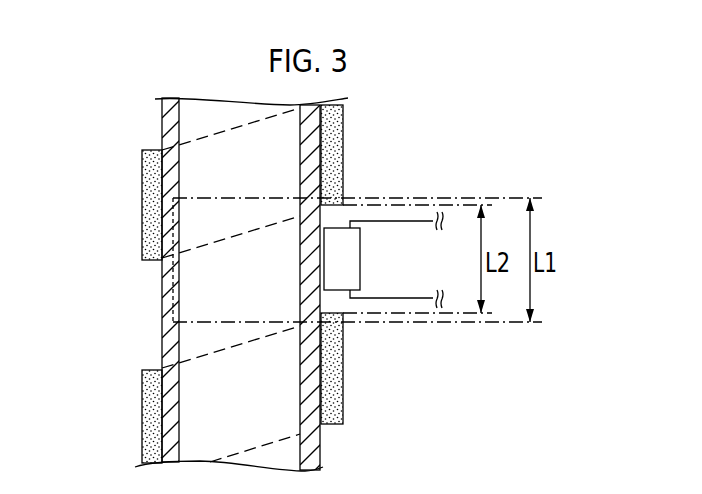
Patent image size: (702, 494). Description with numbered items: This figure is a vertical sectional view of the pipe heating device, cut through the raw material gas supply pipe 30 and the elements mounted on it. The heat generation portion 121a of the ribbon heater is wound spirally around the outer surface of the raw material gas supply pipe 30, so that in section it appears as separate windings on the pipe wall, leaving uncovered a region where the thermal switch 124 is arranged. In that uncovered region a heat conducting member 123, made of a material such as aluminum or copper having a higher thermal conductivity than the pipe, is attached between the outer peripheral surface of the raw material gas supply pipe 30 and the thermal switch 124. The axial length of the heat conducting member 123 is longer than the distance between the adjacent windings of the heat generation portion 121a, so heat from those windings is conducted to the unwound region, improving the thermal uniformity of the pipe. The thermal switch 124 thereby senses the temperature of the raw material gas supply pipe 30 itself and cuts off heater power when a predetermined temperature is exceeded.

The raw material gas supply pipe 30 is at (166, 333).
The heat generation portion 121a is at (142, 201).
The heat conducting member 123 is at (343, 178).
The thermal switch 124 is at (356, 258).